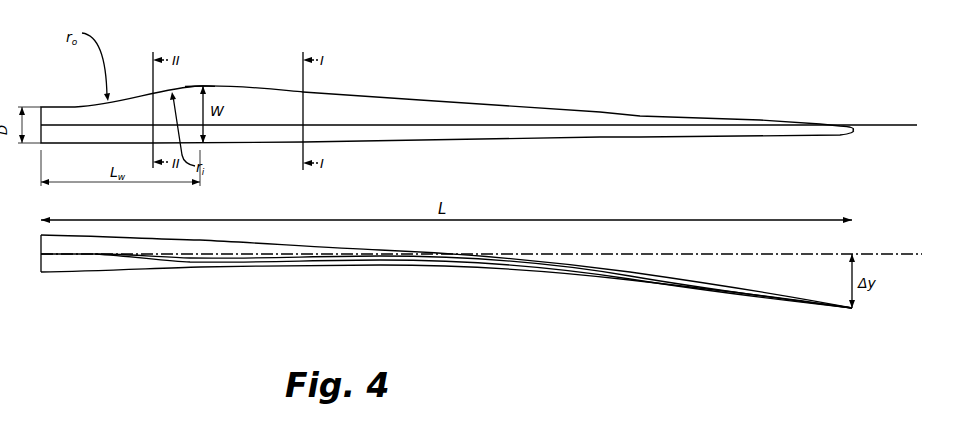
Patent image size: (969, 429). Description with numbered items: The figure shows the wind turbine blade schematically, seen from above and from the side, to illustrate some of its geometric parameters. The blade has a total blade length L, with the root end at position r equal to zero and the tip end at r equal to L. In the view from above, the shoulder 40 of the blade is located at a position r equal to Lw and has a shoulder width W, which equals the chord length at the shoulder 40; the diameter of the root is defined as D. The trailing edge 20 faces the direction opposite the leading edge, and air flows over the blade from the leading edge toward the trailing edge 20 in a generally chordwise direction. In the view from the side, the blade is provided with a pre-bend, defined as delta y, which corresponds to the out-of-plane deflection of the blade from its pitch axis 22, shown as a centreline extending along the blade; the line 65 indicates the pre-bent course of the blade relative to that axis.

The trailing edge 20 is at (353, 258).
The pitch axis 22 is at (362, 122).
The shoulder 40 is at (204, 84).
The pre-bend line 65 is at (196, 265).